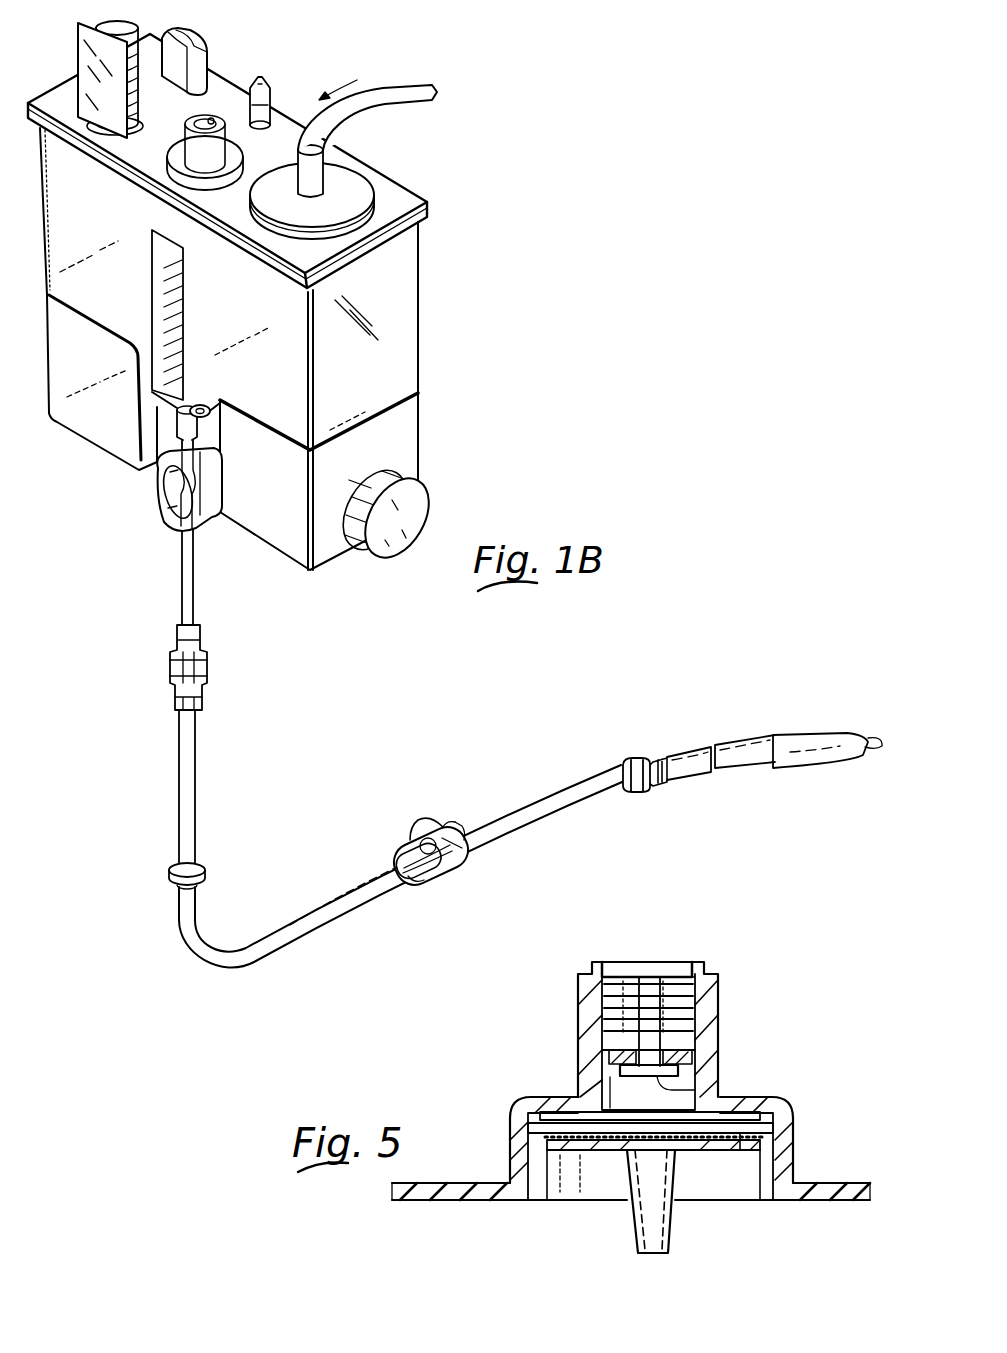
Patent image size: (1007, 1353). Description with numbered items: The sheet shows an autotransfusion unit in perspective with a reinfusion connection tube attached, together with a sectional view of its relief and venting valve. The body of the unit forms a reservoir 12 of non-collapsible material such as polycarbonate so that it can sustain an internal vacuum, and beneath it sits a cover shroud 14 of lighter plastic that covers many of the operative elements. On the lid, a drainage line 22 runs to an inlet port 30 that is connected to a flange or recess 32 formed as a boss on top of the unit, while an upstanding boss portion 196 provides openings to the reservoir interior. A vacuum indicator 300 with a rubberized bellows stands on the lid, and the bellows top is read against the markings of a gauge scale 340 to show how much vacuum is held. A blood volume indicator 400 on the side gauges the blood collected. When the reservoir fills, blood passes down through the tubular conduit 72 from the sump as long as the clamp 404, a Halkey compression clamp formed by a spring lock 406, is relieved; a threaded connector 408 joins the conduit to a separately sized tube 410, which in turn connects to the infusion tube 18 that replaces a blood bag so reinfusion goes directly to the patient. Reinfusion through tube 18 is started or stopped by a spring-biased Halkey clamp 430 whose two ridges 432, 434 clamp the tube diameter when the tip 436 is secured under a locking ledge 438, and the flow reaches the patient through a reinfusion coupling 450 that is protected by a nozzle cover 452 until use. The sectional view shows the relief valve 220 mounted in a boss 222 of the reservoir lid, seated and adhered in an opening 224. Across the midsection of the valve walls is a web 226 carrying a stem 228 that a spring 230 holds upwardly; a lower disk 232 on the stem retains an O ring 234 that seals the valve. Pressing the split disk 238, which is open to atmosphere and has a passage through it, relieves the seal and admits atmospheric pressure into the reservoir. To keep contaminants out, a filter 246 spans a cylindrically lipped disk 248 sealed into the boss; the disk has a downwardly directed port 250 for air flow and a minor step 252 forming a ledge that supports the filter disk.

In FIG. 1B, the reservoir 12 is at (400, 340).
In FIG. 1B, the cover shroud 14 is at (297, 548).
In FIG. 1B, the infusion tube 18 is at (341, 889).
In FIG. 1B, the drainage line 22 is at (393, 87).
In FIG. 1B, the inlet port 30 is at (333, 167).
In FIG. 1B, the flange or recess 32 is at (363, 190).
In FIG. 1B, the tubular conduit 72 is at (190, 443).
In FIG. 1B, the upstanding boss portion 196 is at (193, 40).
In FIG. 1B, the relief valve 220 is at (163, 172).
In FIG. 5, the relief valve 220 is at (730, 1000).
In FIG. 5, the boss 222 is at (503, 1113).
In FIG. 5, the opening 224 is at (590, 1097).
In FIG. 5, the web 226 is at (727, 1000).
In FIG. 5, the stem 228 is at (653, 983).
In FIG. 5, the spring 230 is at (620, 987).
In FIG. 5, the lower disk 232 is at (663, 1087).
In FIG. 5, the O ring 234 is at (687, 1052).
In FIG. 5, the split disk 238 is at (610, 958).
In FIG. 5, the filter 246 is at (583, 1150).
In FIG. 5, the cylindrically lipped disk 248 is at (750, 1167).
In FIG. 5, the port 250 is at (657, 1173).
In FIG. 5, the minor step 252 is at (747, 1142).
In FIG. 1B, the vacuum indicator 300 is at (132, 23).
In FIG. 1B, the gauge scale 340 is at (212, 118).
In FIG. 1B, the blood volume indicator 400 is at (183, 303).
In FIG. 1B, the clamp 404 is at (200, 510).
In FIG. 1B, the spring lock 406 is at (157, 477).
In FIG. 1B, the threaded connector 408 is at (207, 667).
In FIG. 1B, the tube 410 is at (197, 773).
In FIG. 1B, the Halkey clamp 430 is at (440, 870).
In FIG. 1B, the ridge 432 is at (417, 827).
In FIG. 1B, the ridge 434 is at (410, 880).
In FIG. 1B, the tip 436 is at (443, 822).
In FIG. 1B, the locking ledge 438 is at (460, 823).
In FIG. 1B, the reinfusion coupling 450 is at (732, 748).
In FIG. 1B, the nozzle cover 452 is at (793, 740).